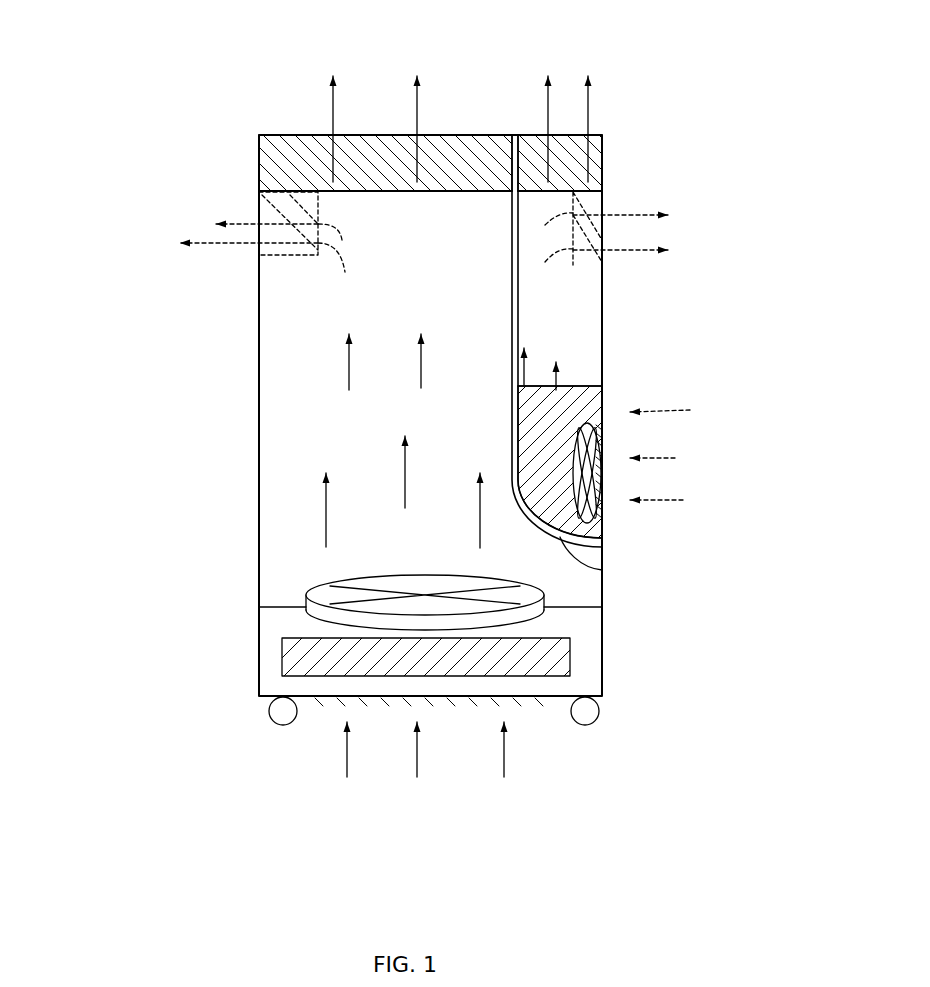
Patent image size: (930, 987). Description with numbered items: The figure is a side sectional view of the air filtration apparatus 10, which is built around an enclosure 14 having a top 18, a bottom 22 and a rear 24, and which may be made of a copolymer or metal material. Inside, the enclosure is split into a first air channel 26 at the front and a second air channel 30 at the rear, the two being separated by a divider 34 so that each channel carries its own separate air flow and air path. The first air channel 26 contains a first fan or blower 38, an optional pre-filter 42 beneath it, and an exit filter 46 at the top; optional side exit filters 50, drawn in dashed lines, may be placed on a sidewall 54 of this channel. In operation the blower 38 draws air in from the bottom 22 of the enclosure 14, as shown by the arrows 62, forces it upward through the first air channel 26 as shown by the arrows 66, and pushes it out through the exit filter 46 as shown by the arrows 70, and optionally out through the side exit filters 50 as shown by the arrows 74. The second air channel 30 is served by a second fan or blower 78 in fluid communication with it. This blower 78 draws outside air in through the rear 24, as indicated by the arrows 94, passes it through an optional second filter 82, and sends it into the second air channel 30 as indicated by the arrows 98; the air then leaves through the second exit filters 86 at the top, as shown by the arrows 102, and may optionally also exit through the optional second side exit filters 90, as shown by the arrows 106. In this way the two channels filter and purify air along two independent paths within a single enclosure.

The air filtration apparatus 10 is at (68, 288).
The enclosure 14 is at (259, 403).
The top 18 is at (260, 136).
The bottom 22 is at (585, 725).
The rear 24 is at (605, 508).
The first air channel 26 is at (283, 553).
The second air channel 30 is at (582, 332).
The divider 34 is at (520, 305).
The first fan or blower 38 is at (530, 615).
The pre-filter 42 is at (283, 660).
The exit filter 46 is at (259, 170).
The side exit filters 50 is at (259, 210).
The sidewall 54 is at (259, 318).
The arrows 62 is at (504, 762).
The arrows 66 is at (480, 497).
The arrows 70 is at (417, 110).
The arrows 74 is at (200, 246).
The second fan or blower 78 is at (592, 397).
The second filter 82 is at (602, 570).
The second exit filters 86 is at (602, 155).
The second side exit filters 90 is at (602, 200).
The arrows 94 is at (683, 500).
The arrows 98 is at (562, 369).
The arrows 102 is at (588, 105).
The arrows 106 is at (668, 215).